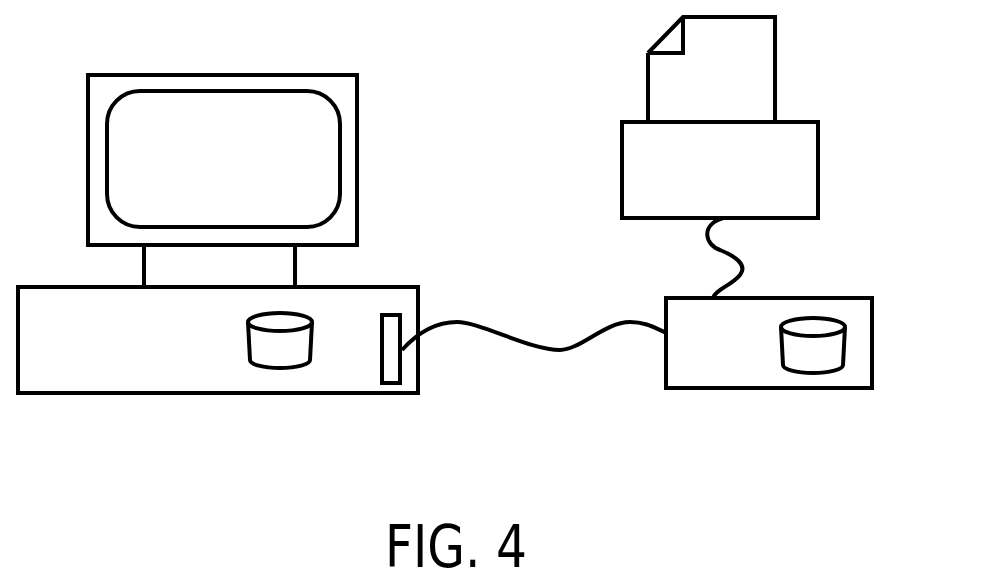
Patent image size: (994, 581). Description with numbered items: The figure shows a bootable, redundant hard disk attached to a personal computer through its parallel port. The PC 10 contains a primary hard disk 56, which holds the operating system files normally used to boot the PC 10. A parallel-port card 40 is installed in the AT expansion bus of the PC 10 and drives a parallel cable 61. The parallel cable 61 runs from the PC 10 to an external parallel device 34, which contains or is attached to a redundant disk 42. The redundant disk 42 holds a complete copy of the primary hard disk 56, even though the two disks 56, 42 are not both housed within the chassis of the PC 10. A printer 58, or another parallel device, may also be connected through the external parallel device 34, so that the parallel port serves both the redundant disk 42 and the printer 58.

The PC 10 is at (78, 393).
The primary hard disk 56 is at (285, 366).
The parallel-port card 40 is at (391, 385).
The parallel cable 61 is at (560, 350).
The external parallel device 34 is at (730, 388).
The redundant disk 42 is at (827, 370).
The printer 58 is at (622, 173).